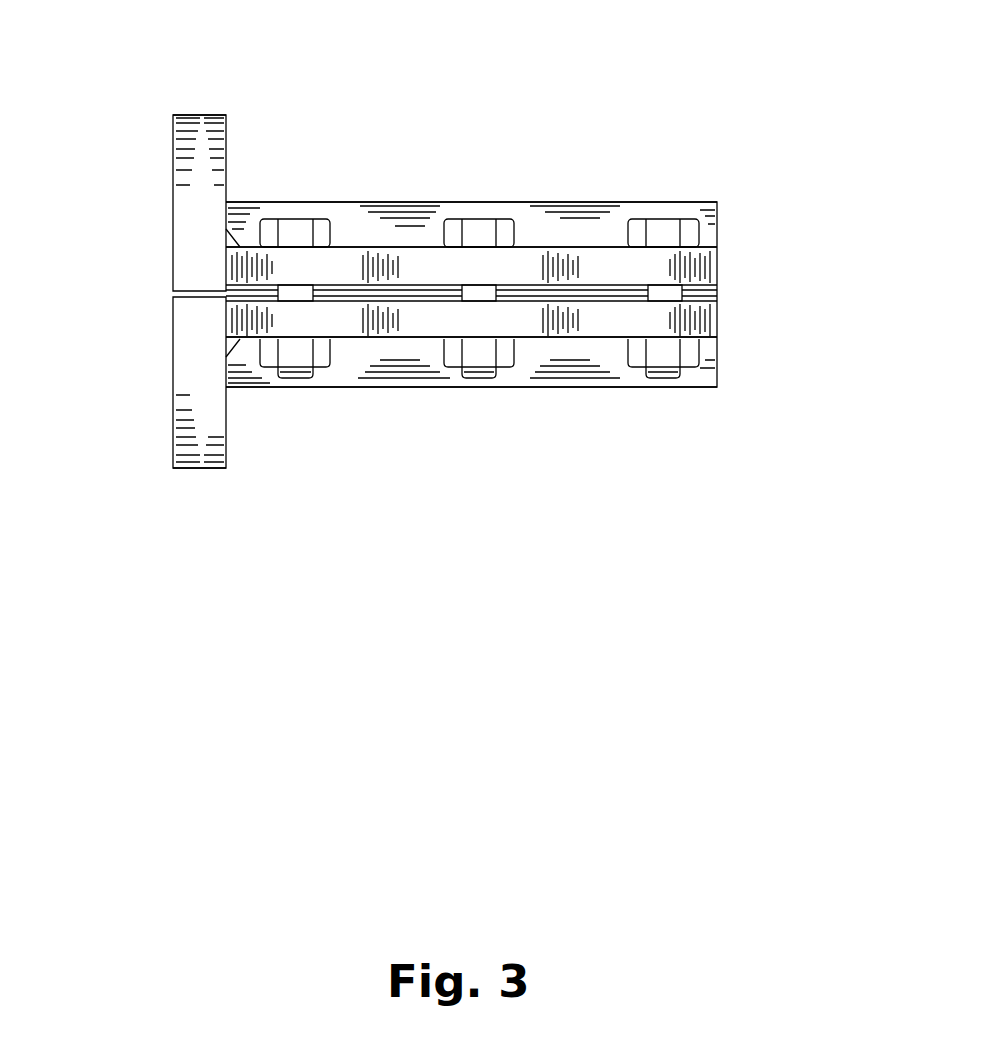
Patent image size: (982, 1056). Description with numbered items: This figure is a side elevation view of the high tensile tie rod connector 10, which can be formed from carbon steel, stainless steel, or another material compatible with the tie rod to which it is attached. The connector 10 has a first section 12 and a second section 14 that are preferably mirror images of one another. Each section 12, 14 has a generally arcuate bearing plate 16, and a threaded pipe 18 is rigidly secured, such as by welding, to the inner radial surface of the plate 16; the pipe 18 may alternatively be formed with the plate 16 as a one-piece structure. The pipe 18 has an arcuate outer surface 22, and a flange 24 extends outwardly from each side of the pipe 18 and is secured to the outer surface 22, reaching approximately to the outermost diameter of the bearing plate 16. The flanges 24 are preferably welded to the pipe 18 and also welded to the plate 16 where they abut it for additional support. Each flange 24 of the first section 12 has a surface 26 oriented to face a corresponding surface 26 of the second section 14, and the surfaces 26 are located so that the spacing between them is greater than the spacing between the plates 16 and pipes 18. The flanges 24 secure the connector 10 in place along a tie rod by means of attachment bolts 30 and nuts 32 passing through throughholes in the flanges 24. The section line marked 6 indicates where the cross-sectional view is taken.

The section line 6- 6 is at (62, 293).
The high tensile tie rod connector 10 is at (437, 412).
The first section 12 is at (170, 219).
The second section 14 is at (170, 337).
The bearing plate 16 is at (195, 113).
The threaded pipe 18 is at (718, 212).
The outer surface 22 is at (683, 202).
The flange 24 is at (718, 264).
The surface 26 is at (716, 290).
The attachment bolt 30 is at (300, 219).
The nut 32 is at (330, 370).